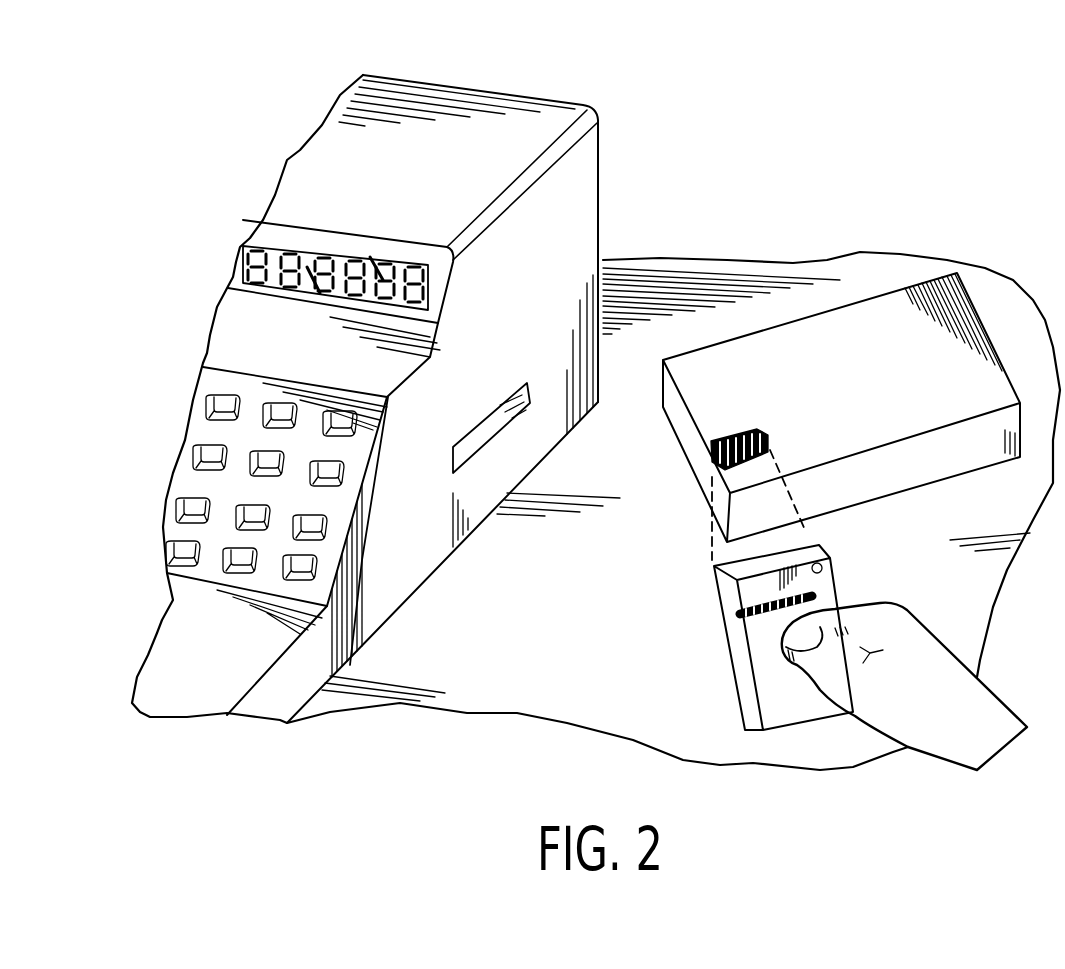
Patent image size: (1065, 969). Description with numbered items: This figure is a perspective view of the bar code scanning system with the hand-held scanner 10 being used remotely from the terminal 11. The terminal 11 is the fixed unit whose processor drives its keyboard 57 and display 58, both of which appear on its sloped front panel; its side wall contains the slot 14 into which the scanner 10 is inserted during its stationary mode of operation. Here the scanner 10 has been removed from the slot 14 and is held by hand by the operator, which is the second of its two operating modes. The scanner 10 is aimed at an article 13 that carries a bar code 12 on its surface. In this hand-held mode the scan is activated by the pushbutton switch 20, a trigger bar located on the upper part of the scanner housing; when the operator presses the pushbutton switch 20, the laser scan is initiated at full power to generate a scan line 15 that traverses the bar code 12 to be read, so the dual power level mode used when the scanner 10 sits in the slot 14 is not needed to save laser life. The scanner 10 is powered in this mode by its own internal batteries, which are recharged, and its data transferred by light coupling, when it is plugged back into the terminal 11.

The hand-held scanner 10 is at (742, 686).
The terminal 11 is at (580, 243).
The bar code 12 is at (770, 410).
The article 13 is at (912, 473).
The slot 14 is at (483, 432).
The scan line 15 is at (712, 448).
The pushbutton switch 20 is at (745, 634).
The keyboard 57 is at (203, 468).
The display 58 is at (248, 274).